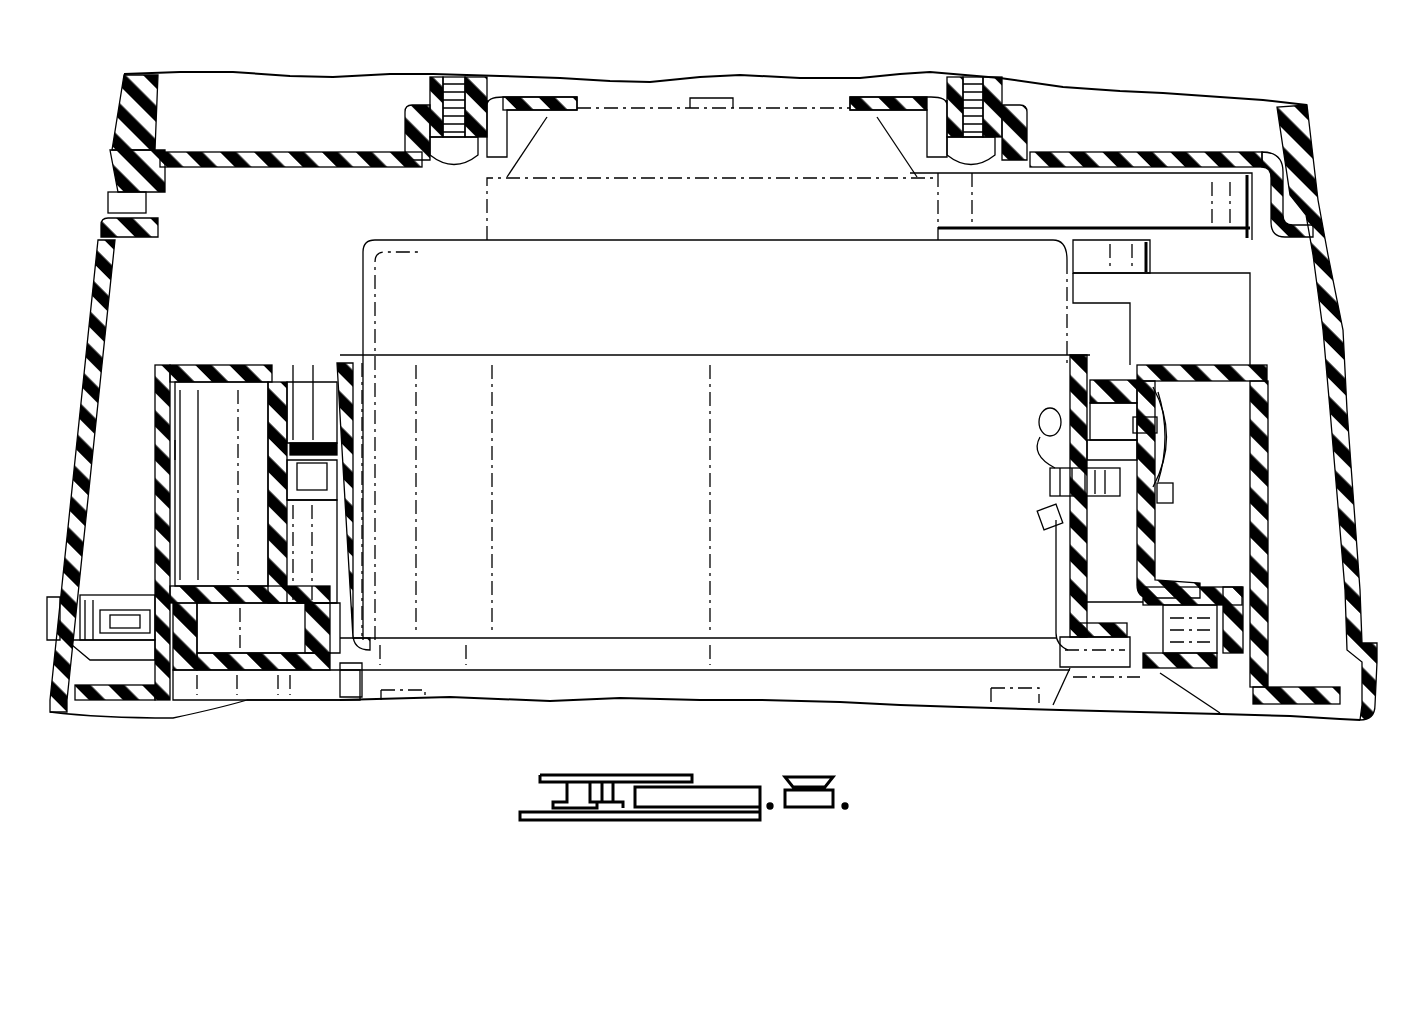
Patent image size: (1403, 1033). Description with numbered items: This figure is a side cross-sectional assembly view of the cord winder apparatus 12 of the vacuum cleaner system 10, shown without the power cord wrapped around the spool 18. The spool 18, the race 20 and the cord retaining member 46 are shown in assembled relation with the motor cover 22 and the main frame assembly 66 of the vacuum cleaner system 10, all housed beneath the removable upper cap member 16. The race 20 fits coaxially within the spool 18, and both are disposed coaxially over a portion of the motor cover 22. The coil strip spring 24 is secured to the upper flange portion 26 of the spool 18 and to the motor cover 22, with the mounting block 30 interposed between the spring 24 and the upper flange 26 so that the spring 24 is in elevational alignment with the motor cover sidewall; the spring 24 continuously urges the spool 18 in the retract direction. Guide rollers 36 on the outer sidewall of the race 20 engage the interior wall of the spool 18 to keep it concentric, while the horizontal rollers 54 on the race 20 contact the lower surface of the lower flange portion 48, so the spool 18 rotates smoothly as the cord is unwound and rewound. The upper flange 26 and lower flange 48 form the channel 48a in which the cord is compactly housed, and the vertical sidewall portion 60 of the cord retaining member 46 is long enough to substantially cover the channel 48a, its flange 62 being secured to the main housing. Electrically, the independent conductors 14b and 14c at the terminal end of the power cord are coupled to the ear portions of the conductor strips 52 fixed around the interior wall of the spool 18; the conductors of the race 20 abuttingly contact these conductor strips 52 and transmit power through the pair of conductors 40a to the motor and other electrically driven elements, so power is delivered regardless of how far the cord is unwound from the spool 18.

The vacuum cleaner system 10 is at (1220, 74).
The cord winder apparatus 12 is at (1324, 413).
The removable upper cap member 16 is at (1323, 247).
The independent conductor 14b is at (1173, 497).
The independent conductor 14c is at (1172, 432).
The spool 18 is at (256, 516).
The race 20 is at (343, 343).
The motor cover 22 is at (363, 272).
The coil strip spring 24 is at (1203, 187).
The upper flange portion 26 is at (222, 375).
The mounting block 30 is at (1233, 318).
The guide rollers 36 is at (337, 477).
The conductors 40a is at (1040, 512).
The power cord retaining member 46 is at (145, 371).
The lower flange portion 48 is at (225, 588).
The channel 48a is at (204, 455).
The conductor strips 52 is at (321, 442).
The horizontal rollers 54 is at (1192, 600).
The vertical sidewall portion 60 is at (158, 511).
The flange 62 is at (118, 700).
The main frame assembly 66 is at (177, 705).